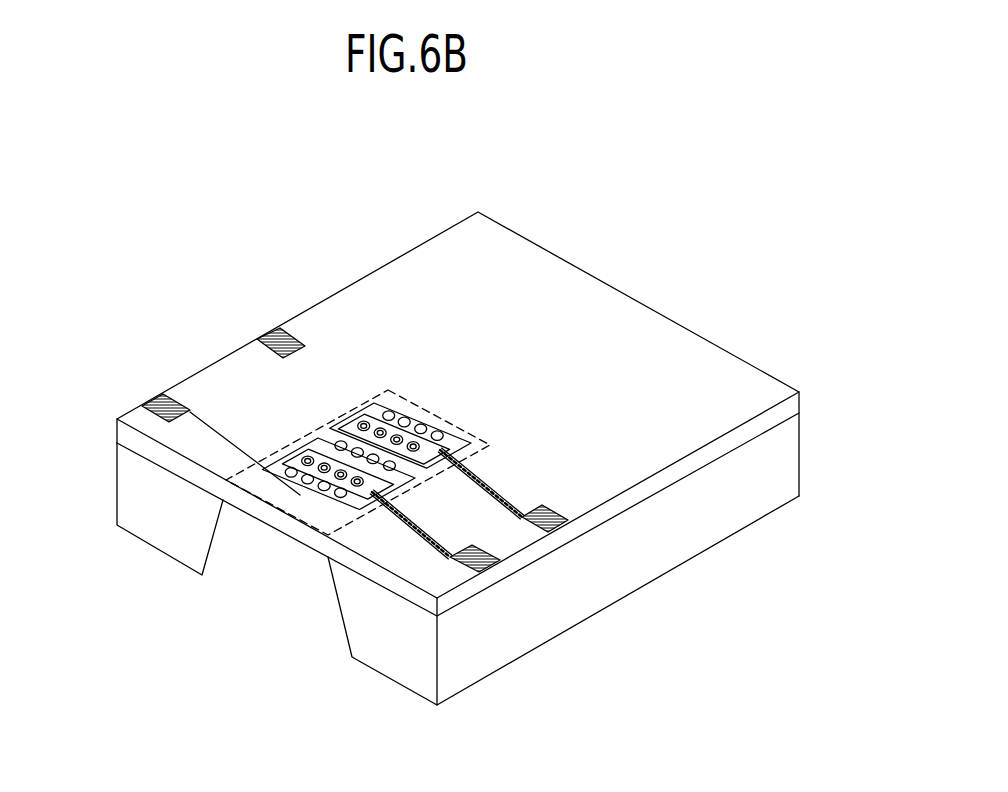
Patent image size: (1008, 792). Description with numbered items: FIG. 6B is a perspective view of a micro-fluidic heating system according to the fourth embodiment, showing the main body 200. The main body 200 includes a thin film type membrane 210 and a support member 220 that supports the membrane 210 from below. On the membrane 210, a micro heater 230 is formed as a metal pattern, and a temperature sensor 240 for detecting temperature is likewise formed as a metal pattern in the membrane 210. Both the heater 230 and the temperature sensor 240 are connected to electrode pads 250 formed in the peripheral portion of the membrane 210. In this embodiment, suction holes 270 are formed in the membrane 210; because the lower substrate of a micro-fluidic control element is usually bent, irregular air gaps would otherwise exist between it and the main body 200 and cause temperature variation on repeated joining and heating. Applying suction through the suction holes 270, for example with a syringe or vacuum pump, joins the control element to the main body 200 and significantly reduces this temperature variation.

The main body 200 is at (465, 455).
The thin film type membrane 210 is at (117, 437).
The support member 220 is at (127, 492).
The micro heater 230 is at (322, 495).
The temperature sensor 240 is at (376, 337).
The electrode pad 250 is at (157, 404).
The suction holes 270 is at (388, 415).